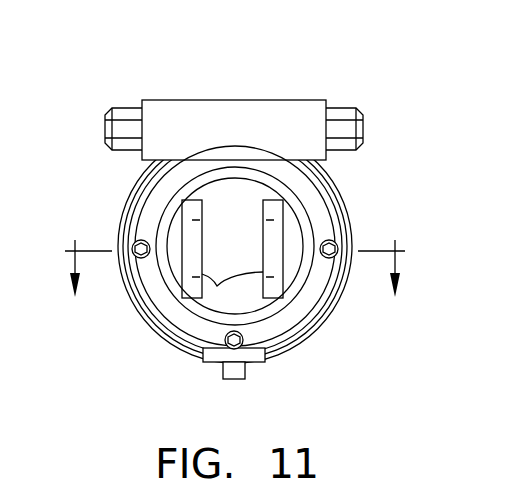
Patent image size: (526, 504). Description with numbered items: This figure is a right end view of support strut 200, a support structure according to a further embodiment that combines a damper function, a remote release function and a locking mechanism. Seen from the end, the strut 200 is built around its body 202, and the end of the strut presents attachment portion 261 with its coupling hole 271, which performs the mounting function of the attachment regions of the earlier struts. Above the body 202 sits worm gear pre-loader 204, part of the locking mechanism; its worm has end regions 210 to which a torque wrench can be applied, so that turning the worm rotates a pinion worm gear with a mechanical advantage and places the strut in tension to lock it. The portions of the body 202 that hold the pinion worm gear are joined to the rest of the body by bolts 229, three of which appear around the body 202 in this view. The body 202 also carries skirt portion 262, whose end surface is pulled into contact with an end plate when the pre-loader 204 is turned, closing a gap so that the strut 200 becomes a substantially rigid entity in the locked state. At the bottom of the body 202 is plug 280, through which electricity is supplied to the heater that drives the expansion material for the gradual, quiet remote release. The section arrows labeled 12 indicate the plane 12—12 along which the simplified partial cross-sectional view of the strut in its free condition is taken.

The support strut 200 is at (97, 165).
The body 202 is at (339, 172).
The worm gear pre-loader 204 is at (273, 87).
The end region 210 is at (128, 108).
The bolt 229 is at (132, 246).
The attachment portion 261 is at (263, 237).
The skirt portion 262 is at (340, 202).
The coupling hole 271 is at (217, 286).
The plug 280 is at (218, 357).
The plane 12— 12 is at (236, 290).